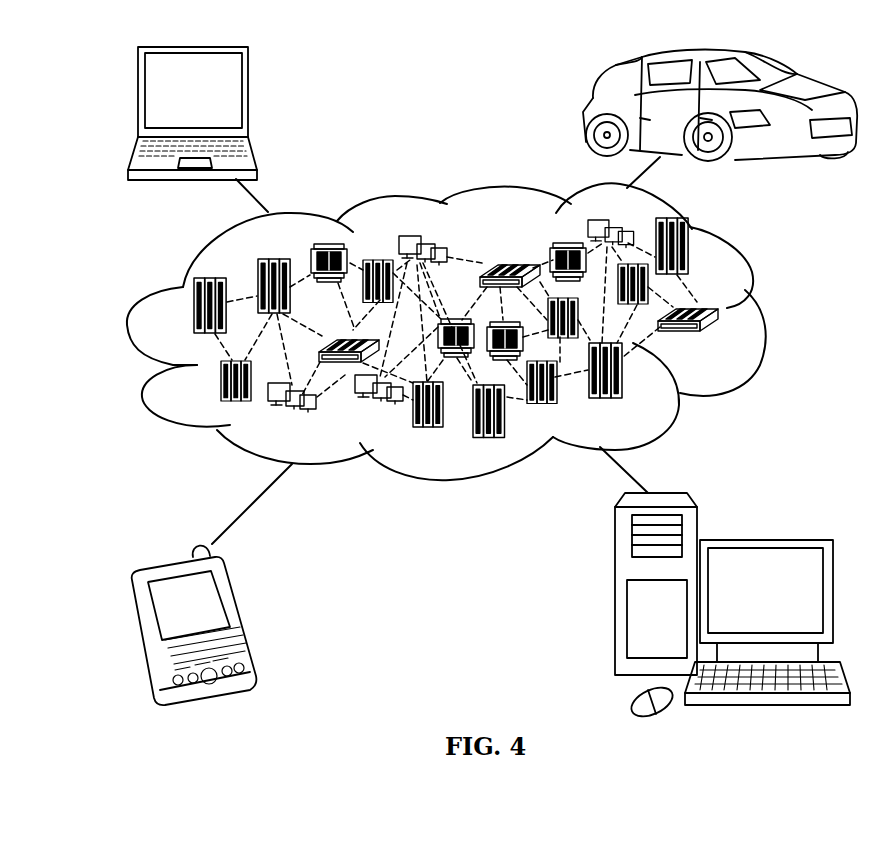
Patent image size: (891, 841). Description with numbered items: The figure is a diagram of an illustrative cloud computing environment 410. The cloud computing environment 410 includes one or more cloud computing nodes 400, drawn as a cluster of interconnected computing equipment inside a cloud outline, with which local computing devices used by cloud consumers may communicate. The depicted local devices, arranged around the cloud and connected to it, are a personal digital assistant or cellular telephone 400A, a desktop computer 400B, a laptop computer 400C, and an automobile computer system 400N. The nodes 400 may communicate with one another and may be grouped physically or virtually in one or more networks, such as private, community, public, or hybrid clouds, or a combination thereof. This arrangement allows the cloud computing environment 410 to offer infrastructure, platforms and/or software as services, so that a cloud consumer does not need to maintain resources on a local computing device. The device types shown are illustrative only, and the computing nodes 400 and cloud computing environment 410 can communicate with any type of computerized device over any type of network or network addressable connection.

The cloud computing nodes 400 is at (716, 335).
The cloud computing environment 410 is at (766, 314).
The personal digital assistant (PDA) or cellular telephone 400A is at (225, 616).
The desktop computer 400B is at (762, 540).
The laptop computer 400C is at (250, 97).
The automobile computer system 400N is at (592, 108).